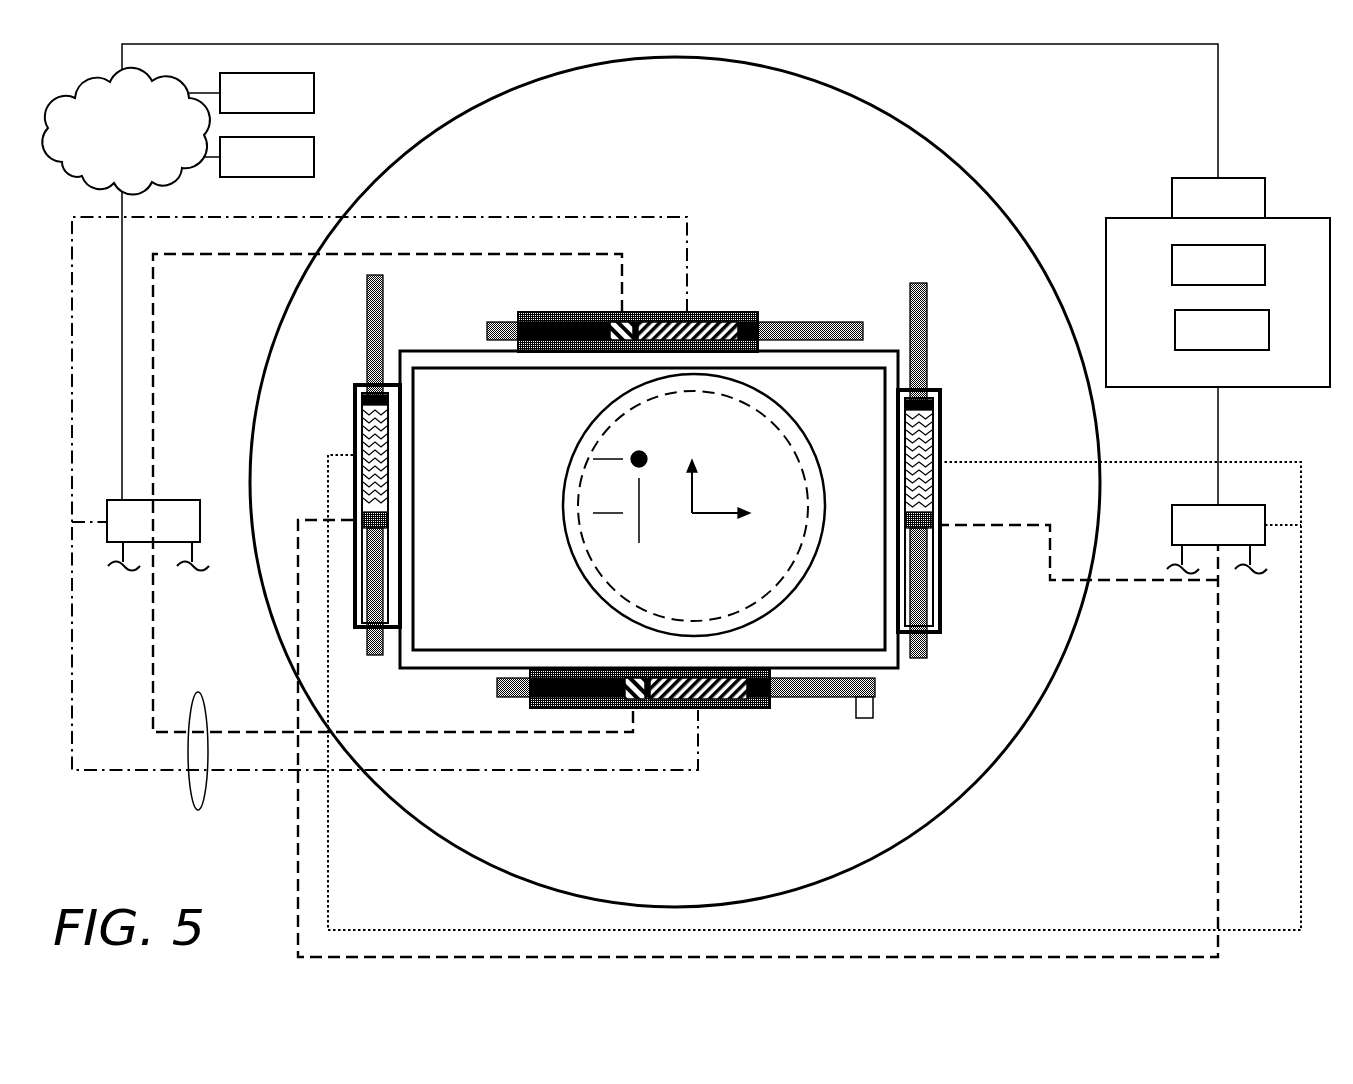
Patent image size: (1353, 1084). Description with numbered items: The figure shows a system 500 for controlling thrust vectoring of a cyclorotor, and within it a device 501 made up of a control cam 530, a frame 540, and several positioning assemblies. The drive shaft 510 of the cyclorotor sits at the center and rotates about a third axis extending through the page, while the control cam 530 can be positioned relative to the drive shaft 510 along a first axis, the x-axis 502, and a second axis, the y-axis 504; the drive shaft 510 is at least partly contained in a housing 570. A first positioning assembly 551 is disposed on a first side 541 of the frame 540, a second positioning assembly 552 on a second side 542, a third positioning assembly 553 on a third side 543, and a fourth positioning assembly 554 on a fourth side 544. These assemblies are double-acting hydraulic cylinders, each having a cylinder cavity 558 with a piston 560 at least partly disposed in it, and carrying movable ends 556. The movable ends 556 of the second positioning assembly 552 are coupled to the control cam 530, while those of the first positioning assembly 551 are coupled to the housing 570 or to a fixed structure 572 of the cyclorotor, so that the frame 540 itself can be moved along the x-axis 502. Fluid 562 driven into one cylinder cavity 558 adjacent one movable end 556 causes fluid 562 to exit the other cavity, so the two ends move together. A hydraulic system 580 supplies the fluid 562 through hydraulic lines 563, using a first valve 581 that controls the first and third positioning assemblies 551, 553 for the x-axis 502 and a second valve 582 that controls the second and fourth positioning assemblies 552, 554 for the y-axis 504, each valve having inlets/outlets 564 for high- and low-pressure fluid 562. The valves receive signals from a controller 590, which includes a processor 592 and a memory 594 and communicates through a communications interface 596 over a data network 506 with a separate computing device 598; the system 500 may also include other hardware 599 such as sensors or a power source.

The system 500 is at (1281, 95).
The device 501 is at (950, 124).
The x-axis 502 is at (734, 483).
The y-axis 504 is at (651, 476).
The data network 506 is at (98, 145).
The drive shaft 510 is at (611, 589).
The control cam 530 is at (416, 144).
The frame 540 is at (885, 338).
The first side 541 is at (428, 350).
The second side 542 is at (398, 649).
The third side 543 is at (878, 676).
The fourth side 544 is at (900, 662).
The first positioning assembly 551 is at (728, 290).
The second positioning assembly 552 is at (341, 415).
The third positioning assembly 553 is at (720, 724).
The fourth positioning assembly 554 is at (957, 415).
The movable ends 556 is at (927, 290).
The cylinder cavity 558 is at (940, 450).
The piston 560 is at (927, 345).
The fluid 562 is at (355, 435).
The hydraulic lines 563 is at (190, 795).
The inlets/outlets 564 is at (1254, 595).
The housing 570 is at (565, 525).
The fixed structure 572 is at (853, 716).
The hydraulic system 580 is at (227, 648).
The first valve 581 is at (133, 534).
The second valve 582 is at (1198, 538).
The controller 590 is at (1290, 388).
The processor 592 is at (1198, 278).
The memory 594 is at (1202, 343).
The communications interface 596 is at (1198, 211).
The separate computing device 598 is at (247, 106).
The other hardware 599 is at (247, 170).